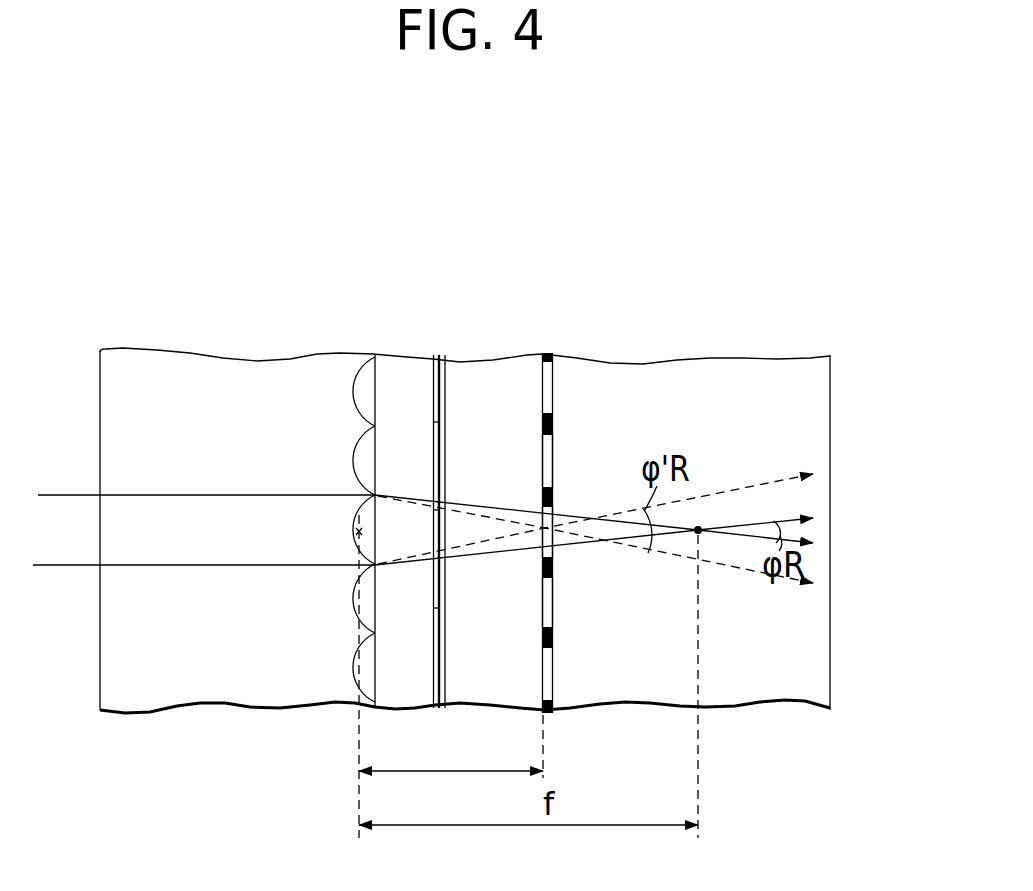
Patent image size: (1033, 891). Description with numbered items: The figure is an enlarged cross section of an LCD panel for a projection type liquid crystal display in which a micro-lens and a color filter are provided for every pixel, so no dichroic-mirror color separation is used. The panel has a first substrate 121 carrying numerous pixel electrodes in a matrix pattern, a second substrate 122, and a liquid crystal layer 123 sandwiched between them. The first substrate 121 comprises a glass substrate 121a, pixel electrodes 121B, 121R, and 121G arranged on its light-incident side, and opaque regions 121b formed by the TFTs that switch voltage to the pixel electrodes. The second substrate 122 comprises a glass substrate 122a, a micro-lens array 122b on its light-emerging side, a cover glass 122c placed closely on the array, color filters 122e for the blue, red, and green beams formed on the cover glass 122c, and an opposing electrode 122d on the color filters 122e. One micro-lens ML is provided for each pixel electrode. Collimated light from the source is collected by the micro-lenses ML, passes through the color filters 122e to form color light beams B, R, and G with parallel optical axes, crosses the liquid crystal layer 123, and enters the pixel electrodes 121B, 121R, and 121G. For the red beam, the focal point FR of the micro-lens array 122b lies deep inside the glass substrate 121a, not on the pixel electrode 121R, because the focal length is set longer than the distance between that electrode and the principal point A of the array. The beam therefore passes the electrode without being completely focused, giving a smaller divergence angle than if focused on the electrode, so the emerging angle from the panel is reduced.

The first substrate 121 is at (791, 290).
The pixel electrode 121G is at (556, 455).
The pixel electrode 121R is at (556, 510).
The pixel electrode 121B is at (553, 608).
The glass substrate 121a is at (756, 378).
The opaque regions 121b is at (543, 637).
The second substrate 122 is at (468, 248).
The glass substrate 122a is at (158, 365).
The micro-lens array 122b is at (356, 391).
The cover glass 122c is at (392, 370).
The opposing electrode 122d is at (446, 378).
The color filters 122e is at (437, 378).
The liquid crystal layer 123 is at (522, 380).
The micro-lens ML is at (374, 496).
The principal point A is at (344, 521).
The B light beam B is at (433, 450).
The R light beam R is at (434, 526).
The G light beam G is at (434, 617).
The focal point FR is at (699, 529).